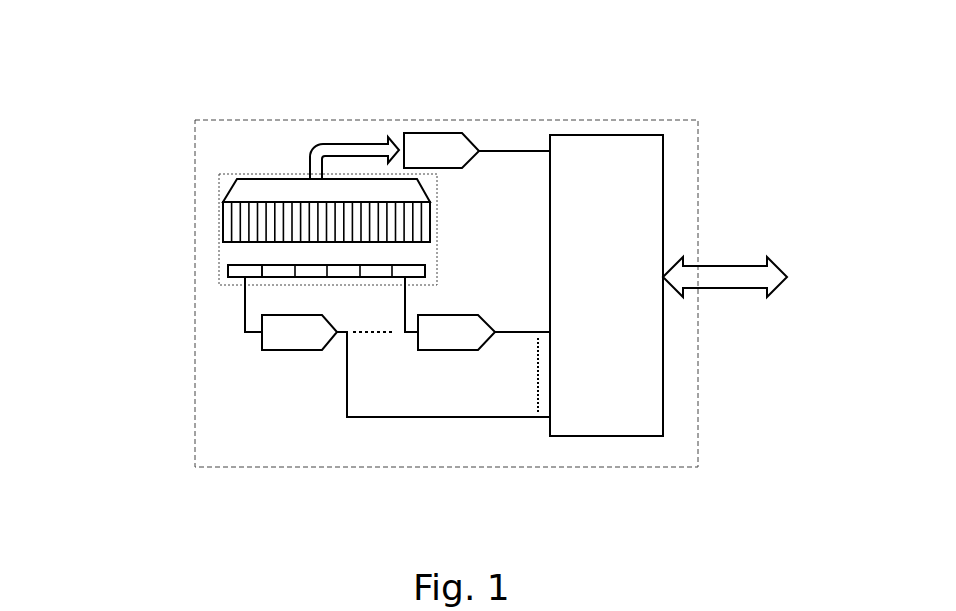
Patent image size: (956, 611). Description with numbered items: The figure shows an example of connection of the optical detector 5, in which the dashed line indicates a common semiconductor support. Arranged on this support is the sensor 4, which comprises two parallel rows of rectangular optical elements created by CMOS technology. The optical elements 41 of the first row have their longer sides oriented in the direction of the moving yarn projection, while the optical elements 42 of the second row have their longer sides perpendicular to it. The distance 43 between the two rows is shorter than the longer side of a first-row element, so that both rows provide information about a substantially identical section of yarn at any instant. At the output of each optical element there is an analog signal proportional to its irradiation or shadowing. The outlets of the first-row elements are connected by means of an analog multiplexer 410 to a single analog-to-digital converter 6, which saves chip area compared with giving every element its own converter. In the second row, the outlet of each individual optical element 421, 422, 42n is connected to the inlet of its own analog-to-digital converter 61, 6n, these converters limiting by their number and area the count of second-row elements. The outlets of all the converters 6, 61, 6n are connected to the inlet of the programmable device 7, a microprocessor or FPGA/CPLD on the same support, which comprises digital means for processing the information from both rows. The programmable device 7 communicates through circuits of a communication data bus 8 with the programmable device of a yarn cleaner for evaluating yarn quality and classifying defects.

The sensor 4 is at (230, 177).
The analog multiplexer 410 is at (278, 187).
The optical elements of the first row 41 is at (207, 226).
The distance between the first row and the second row 43 is at (214, 264).
The optical elements of the second row 42 is at (228, 278).
The first optical element of the second row 421 is at (247, 270).
The second optical element of the second row 422 is at (280, 270).
The n-th optical element of the second row 42n is at (411, 282).
The analog-to-digital converter of the second row 61 is at (273, 340).
The n-th analog-to-digital converter of the second row 6n is at (475, 338).
The analog-to-digital converter 6 is at (452, 145).
The programmable device 7 is at (607, 142).
The optical detector 5 is at (677, 135).
The communication data bus 8 is at (742, 273).